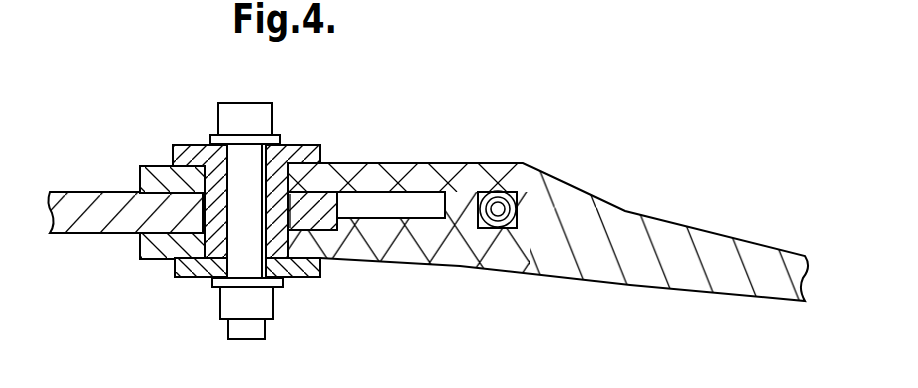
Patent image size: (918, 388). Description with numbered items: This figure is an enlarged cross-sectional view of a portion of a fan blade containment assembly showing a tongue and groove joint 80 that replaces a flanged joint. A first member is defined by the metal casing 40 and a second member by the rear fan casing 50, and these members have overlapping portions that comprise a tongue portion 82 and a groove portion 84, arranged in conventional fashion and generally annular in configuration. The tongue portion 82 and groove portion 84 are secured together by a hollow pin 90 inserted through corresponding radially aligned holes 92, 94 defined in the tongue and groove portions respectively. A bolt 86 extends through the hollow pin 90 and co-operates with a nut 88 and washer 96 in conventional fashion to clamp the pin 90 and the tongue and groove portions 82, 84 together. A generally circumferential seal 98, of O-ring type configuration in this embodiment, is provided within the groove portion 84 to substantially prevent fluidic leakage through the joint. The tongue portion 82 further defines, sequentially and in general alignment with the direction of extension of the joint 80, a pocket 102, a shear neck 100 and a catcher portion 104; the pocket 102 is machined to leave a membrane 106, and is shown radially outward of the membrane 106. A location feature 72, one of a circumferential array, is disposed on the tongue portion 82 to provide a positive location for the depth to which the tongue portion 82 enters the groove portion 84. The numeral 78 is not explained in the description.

The metal casing 40 is at (78, 234).
The rear fan casing 50 is at (675, 222).
The location feature 72 is at (140, 181).
The bolt 78 is at (256, 172).
The tongue and groove joint 80 is at (469, 198).
The tongue portion 82 is at (100, 192).
The groove portion 84 is at (548, 221).
The bolt 86 is at (257, 122).
The nut 88 is at (233, 301).
The hollow pin 90 is at (190, 145).
The hole 92 is at (148, 218).
The hole 94 is at (296, 186).
The washer 96 is at (185, 278).
The circumferential seal 98 is at (518, 212).
The shear neck 100 is at (412, 210).
The pocket 102 is at (440, 165).
The catcher portion 104 is at (567, 186).
The membrane 106 is at (392, 226).